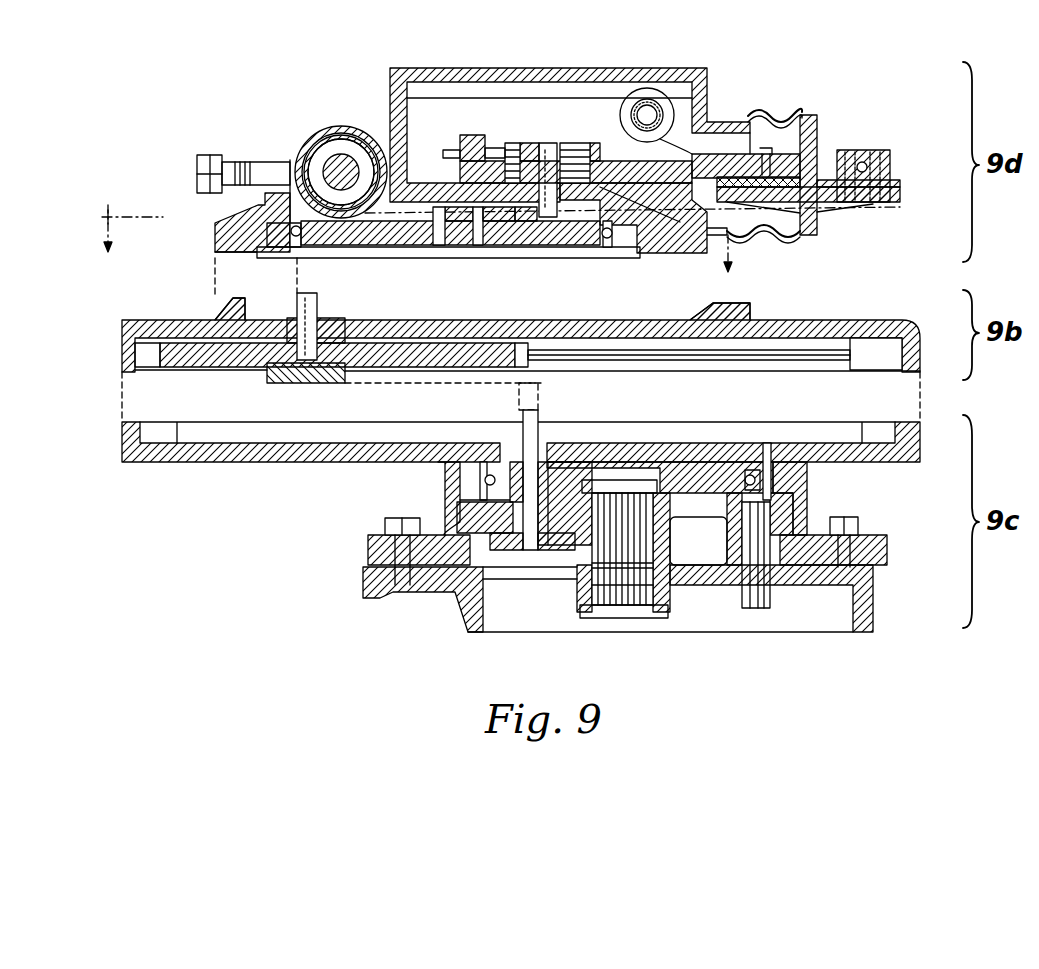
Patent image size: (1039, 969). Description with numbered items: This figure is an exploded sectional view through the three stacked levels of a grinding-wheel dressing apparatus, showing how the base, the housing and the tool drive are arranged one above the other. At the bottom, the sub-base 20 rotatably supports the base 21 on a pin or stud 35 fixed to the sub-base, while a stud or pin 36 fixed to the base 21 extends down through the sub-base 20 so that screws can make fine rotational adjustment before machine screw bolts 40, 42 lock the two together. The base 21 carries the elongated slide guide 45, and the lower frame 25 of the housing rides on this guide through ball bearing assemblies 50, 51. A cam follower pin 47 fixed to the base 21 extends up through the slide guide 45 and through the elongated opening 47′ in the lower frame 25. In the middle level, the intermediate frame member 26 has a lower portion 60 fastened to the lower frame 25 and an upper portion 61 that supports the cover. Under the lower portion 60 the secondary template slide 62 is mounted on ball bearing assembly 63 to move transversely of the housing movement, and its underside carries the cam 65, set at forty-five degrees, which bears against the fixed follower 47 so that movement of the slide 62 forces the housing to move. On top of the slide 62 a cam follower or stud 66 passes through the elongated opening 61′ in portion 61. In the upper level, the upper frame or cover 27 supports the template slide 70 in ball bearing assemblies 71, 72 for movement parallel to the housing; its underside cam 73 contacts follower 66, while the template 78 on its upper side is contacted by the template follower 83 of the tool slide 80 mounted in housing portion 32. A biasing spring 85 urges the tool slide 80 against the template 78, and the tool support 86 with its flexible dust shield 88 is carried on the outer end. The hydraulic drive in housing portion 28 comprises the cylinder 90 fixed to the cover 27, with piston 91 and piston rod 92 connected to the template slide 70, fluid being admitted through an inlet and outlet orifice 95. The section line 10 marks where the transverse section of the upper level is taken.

The section line 10— 10 is at (492, 251).
The sub-base 20 is at (867, 625).
The base 21 is at (887, 560).
The lower frame 25 is at (228, 462).
The intermediate frame member 26 is at (748, 312).
The upper frame or cover 27 is at (665, 245).
The housing portion 28 is at (327, 128).
The housing portion 32 is at (391, 103).
The pin or stud 35 is at (620, 590).
The stud or pin 36 is at (745, 600).
The machine screw bolt 40 is at (852, 517).
The machine screw bolt 42 is at (395, 518).
The slide guide 45 is at (690, 478).
The cam follower pin or stud 47 is at (522, 433).
The elongated opening 47′ is at (552, 446).
The ball bearing assembly 50 is at (750, 474).
The ball bearing assembly 51 is at (488, 475).
The lower portion of intermediate frame 60 is at (122, 353).
The upper portion of intermediate frame 61 is at (218, 306).
The elongated opening 61′ is at (555, 330).
The secondary template slide 62 is at (220, 372).
The ball bearing assembly 63 is at (519, 344).
The cam 65 is at (252, 382).
The cam follower or stud 66 is at (307, 297).
The template slide 70 is at (493, 247).
The ball bearing assembly 71 is at (607, 240).
The ball bearing assembly 72 is at (295, 237).
The cam 73 is at (427, 253).
The template 78 is at (514, 223).
The tool slide 80 is at (615, 162).
The template follower 83 is at (543, 142).
The biasing spring 85 is at (653, 90).
The tool support 86 is at (817, 145).
The flexible dust shield 88 is at (752, 110).
The cylinder 90 is at (328, 136).
The piston 91 is at (356, 149).
The piston rod 92 is at (333, 165).
The inlet and outlet orifice 95 is at (200, 162).